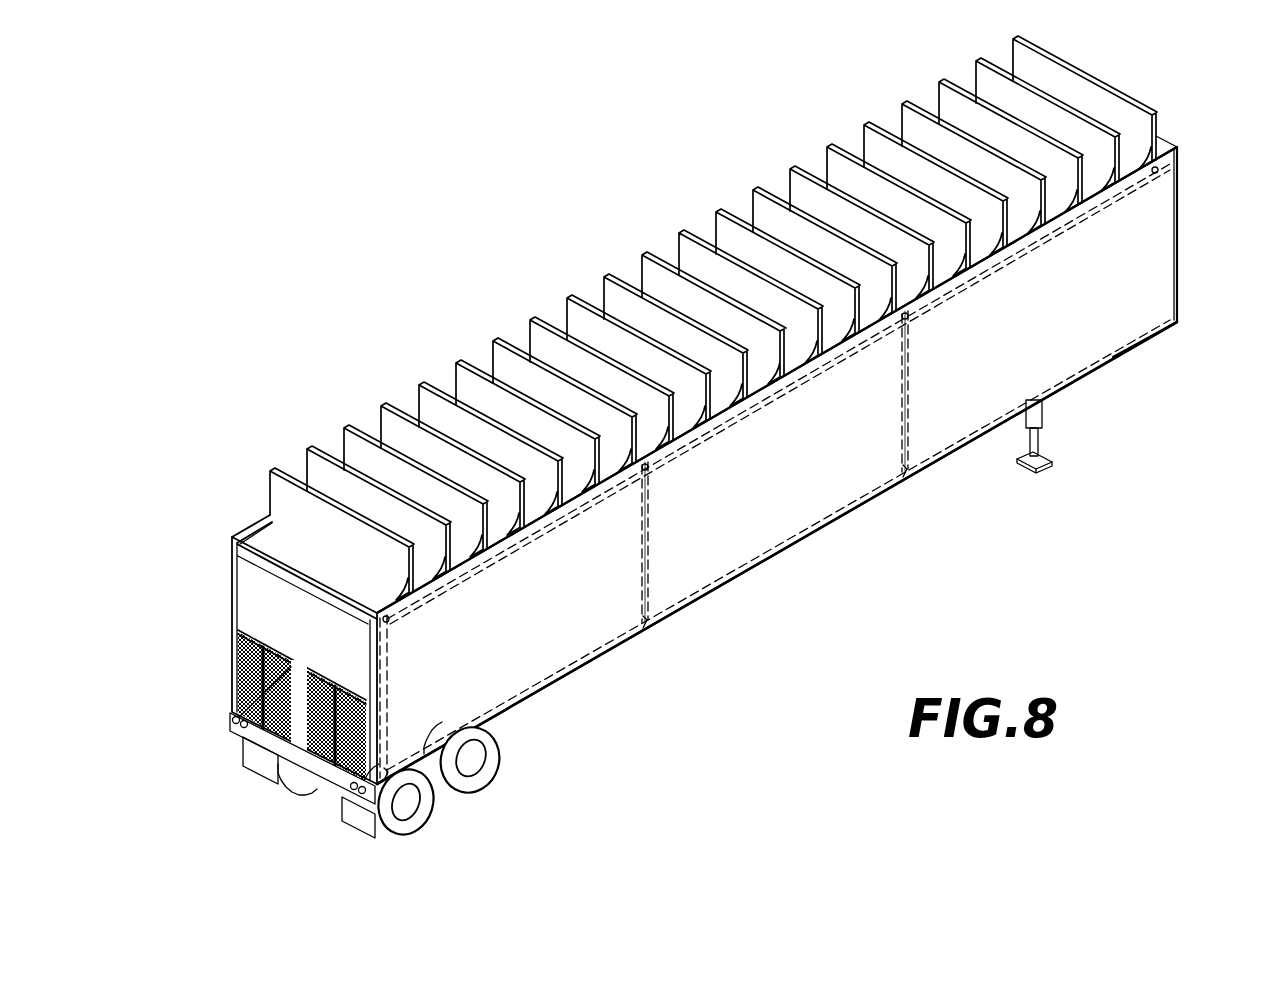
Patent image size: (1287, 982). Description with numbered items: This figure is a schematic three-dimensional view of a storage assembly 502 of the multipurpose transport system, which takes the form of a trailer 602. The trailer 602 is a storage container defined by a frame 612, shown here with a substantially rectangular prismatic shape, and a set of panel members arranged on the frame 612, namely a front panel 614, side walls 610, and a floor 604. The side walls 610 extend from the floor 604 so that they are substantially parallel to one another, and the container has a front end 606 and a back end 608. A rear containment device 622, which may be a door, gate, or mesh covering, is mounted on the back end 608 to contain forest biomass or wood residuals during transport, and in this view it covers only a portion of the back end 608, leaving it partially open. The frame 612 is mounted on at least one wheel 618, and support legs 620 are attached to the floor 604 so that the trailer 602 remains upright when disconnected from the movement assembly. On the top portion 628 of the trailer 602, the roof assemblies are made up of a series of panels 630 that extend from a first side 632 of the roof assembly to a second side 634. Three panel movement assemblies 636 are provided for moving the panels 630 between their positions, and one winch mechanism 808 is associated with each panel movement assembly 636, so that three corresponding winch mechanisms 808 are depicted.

The storage assembly 502 is at (302, 147).
The trailer 602 is at (1087, 352).
The floor 604 is at (850, 492).
The front end 606 is at (1182, 235).
The back end 608 is at (255, 597).
The side walls 610 is at (270, 538).
The frame 612 is at (1143, 343).
The front panel 614 is at (1130, 163).
The wheel 618 is at (483, 766).
The support legs 620 is at (1045, 415).
The rear containment device 622 is at (248, 675).
The top portion 628 is at (388, 358).
The panels 630 is at (322, 463).
The first side 632 is at (250, 519).
The second side 634 is at (457, 566).
The panel movement assembly 636 is at (400, 625).
The winch mechanism 808 is at (392, 710).